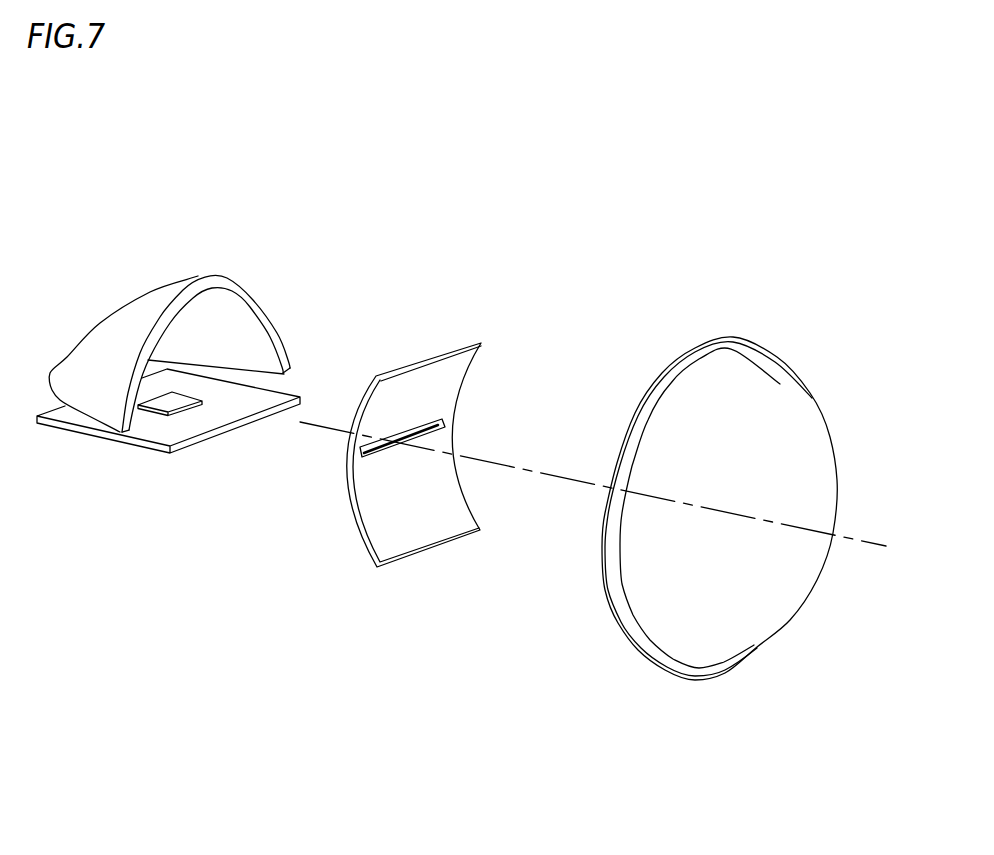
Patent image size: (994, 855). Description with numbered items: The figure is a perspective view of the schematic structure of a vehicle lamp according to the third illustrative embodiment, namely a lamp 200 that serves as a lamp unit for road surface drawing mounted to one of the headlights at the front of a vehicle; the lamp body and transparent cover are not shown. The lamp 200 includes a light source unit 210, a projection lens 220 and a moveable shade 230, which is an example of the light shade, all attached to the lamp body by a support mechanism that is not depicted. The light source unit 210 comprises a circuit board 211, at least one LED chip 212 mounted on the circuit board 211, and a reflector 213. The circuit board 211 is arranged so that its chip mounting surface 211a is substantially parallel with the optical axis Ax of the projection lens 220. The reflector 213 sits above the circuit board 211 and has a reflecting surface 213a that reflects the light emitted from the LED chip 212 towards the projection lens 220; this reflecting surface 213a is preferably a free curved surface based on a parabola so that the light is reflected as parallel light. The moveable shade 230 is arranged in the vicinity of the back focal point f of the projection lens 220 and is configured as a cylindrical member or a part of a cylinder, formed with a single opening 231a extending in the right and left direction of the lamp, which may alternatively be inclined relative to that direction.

The lamp 200 is at (482, 628).
The light source unit 210 is at (183, 270).
The circuit board 211 is at (217, 450).
The chip mounting surface 211a is at (252, 398).
The LED chip 212 is at (173, 403).
The reflector 213 is at (225, 277).
The reflecting surface 213a is at (238, 330).
The projection lens 220 is at (813, 362).
The moveable shade 230 is at (423, 375).
The opening 231a is at (400, 442).
The back focal point f is at (402, 443).
The optical axis Ax is at (611, 493).